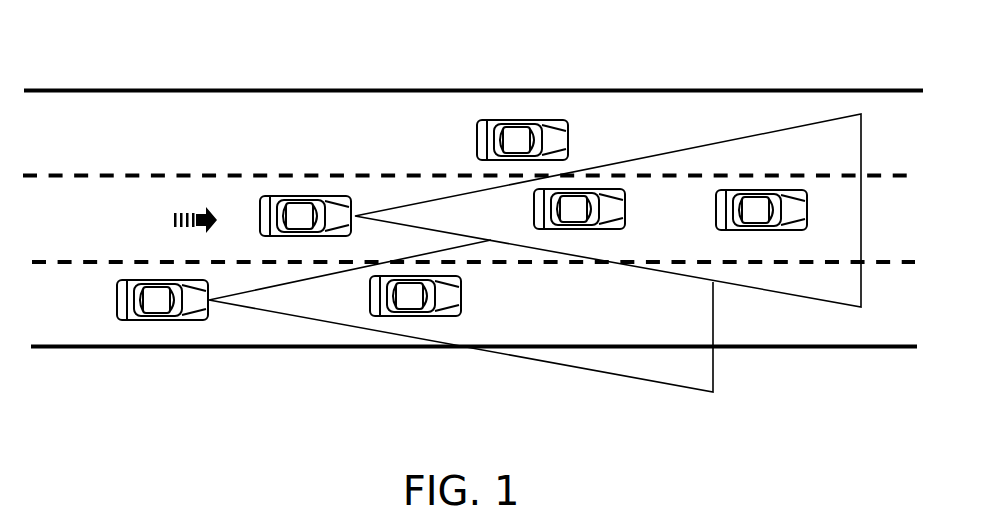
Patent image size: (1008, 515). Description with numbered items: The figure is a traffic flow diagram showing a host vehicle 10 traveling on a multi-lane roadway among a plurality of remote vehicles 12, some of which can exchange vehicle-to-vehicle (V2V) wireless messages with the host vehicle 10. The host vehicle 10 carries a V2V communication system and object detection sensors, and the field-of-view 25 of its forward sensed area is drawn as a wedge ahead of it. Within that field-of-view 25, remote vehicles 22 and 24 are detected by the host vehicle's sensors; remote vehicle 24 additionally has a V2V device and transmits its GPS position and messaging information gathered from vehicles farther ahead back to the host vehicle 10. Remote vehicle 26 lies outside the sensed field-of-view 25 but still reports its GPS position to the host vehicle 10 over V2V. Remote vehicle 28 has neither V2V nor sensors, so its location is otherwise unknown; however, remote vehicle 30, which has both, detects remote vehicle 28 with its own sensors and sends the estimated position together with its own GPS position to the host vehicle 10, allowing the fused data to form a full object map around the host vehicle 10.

The host vehicle 10 is at (300, 196).
The remote vehicles 12 is at (688, 114).
The remote vehicle 22 is at (582, 230).
The remote vehicle 24 is at (758, 231).
The field-of-view 25 is at (755, 140).
The remote vehicle 26 is at (523, 120).
The remote vehicle 28 is at (415, 317).
The remote vehicle 30 is at (155, 320).